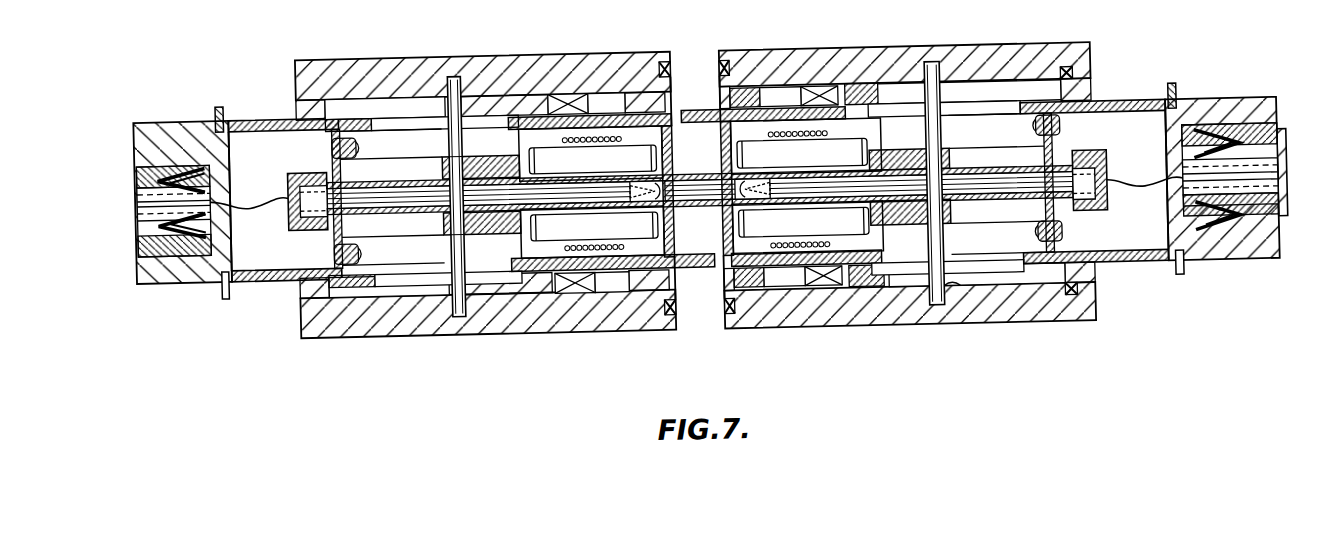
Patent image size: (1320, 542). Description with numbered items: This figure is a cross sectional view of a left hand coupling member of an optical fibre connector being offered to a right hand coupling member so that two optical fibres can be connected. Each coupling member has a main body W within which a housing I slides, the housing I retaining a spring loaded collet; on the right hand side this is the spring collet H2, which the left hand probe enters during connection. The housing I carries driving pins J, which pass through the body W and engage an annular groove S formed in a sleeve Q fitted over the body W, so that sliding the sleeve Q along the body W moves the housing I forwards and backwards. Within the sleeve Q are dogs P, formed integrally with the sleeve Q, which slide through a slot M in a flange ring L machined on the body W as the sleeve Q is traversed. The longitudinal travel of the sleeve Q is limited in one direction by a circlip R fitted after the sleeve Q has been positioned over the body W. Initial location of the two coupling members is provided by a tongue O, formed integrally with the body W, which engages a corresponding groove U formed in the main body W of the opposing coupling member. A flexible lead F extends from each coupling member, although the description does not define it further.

The circlip R is at (217, 108).
The driving pins J is at (456, 72).
The tongue O is at (695, 108).
The groove U is at (660, 116).
The housing I is at (726, 213).
The dogs P is at (747, 92).
The slot M is at (823, 92).
The sleeve Q is at (1002, 62).
The main body W is at (1125, 111).
The flexible wire F is at (1140, 190).
The spring collet H2 is at (937, 145).
The flange ring L is at (802, 290).
The annular groove S is at (950, 292).